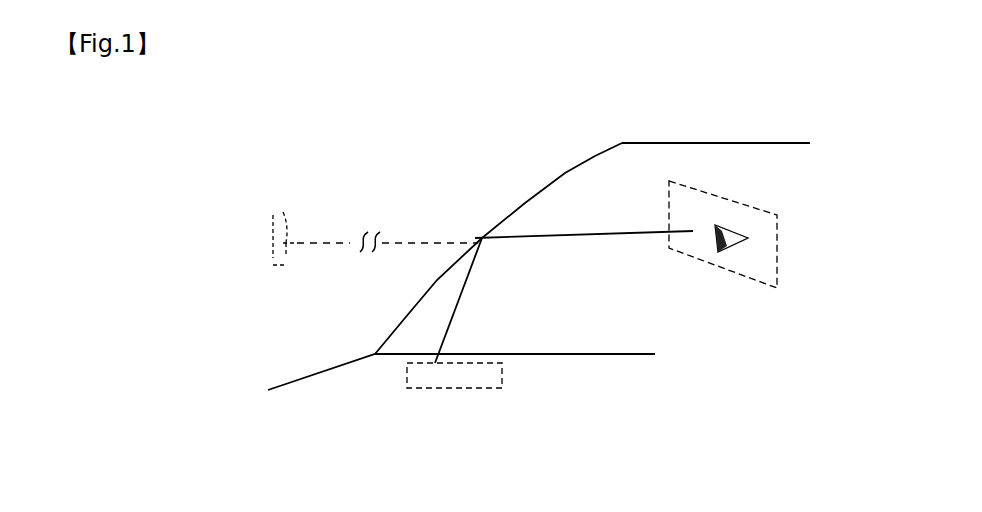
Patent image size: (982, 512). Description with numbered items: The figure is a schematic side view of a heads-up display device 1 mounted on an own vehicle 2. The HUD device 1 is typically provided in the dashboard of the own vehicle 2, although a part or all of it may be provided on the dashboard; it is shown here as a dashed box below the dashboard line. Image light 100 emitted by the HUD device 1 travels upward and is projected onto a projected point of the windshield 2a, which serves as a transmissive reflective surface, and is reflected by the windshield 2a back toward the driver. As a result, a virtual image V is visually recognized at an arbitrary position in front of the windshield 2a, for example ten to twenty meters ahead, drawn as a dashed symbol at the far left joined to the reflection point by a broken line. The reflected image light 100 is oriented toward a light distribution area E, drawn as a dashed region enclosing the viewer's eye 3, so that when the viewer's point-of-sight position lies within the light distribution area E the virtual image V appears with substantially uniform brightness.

The heads-up display device 1 is at (492, 398).
The own vehicle 2 is at (739, 141).
The windshield 2a is at (566, 176).
The eye of driver 3 is at (730, 234).
The image light 100 is at (463, 300).
The light distribution area E is at (763, 295).
The virtual image V is at (282, 204).